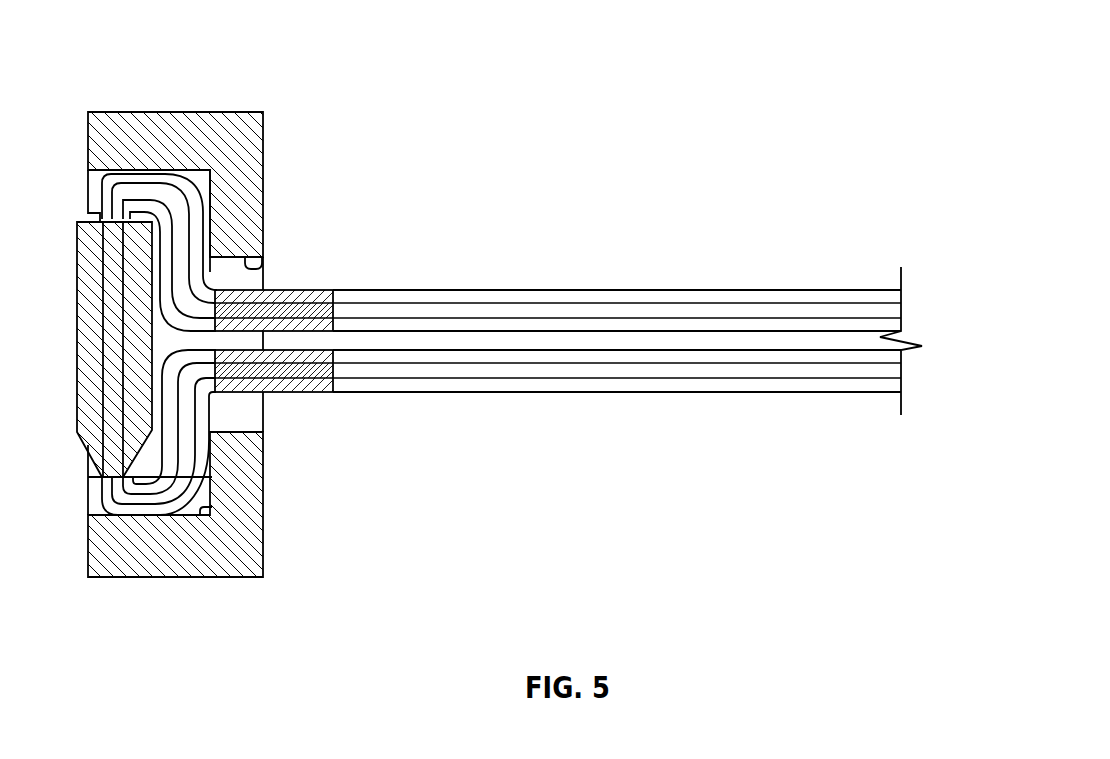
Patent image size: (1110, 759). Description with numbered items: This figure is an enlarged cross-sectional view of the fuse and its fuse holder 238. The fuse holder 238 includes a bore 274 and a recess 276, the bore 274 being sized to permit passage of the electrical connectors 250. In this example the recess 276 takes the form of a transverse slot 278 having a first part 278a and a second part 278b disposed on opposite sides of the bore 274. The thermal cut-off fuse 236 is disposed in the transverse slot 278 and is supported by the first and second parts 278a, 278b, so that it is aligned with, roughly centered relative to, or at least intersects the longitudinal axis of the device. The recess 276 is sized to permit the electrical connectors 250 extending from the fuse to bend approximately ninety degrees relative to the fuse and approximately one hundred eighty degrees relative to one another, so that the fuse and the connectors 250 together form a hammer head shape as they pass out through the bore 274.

The thermal cut-off fuse 236 is at (77, 333).
The fuse holder 238 is at (218, 112).
The electrical connectors 250 is at (723, 295).
The bore 274 is at (263, 262).
The recess 276 is at (196, 172).
The transverse slot 278 is at (212, 472).
The first part 278a is at (202, 516).
The second part 278b is at (200, 188).